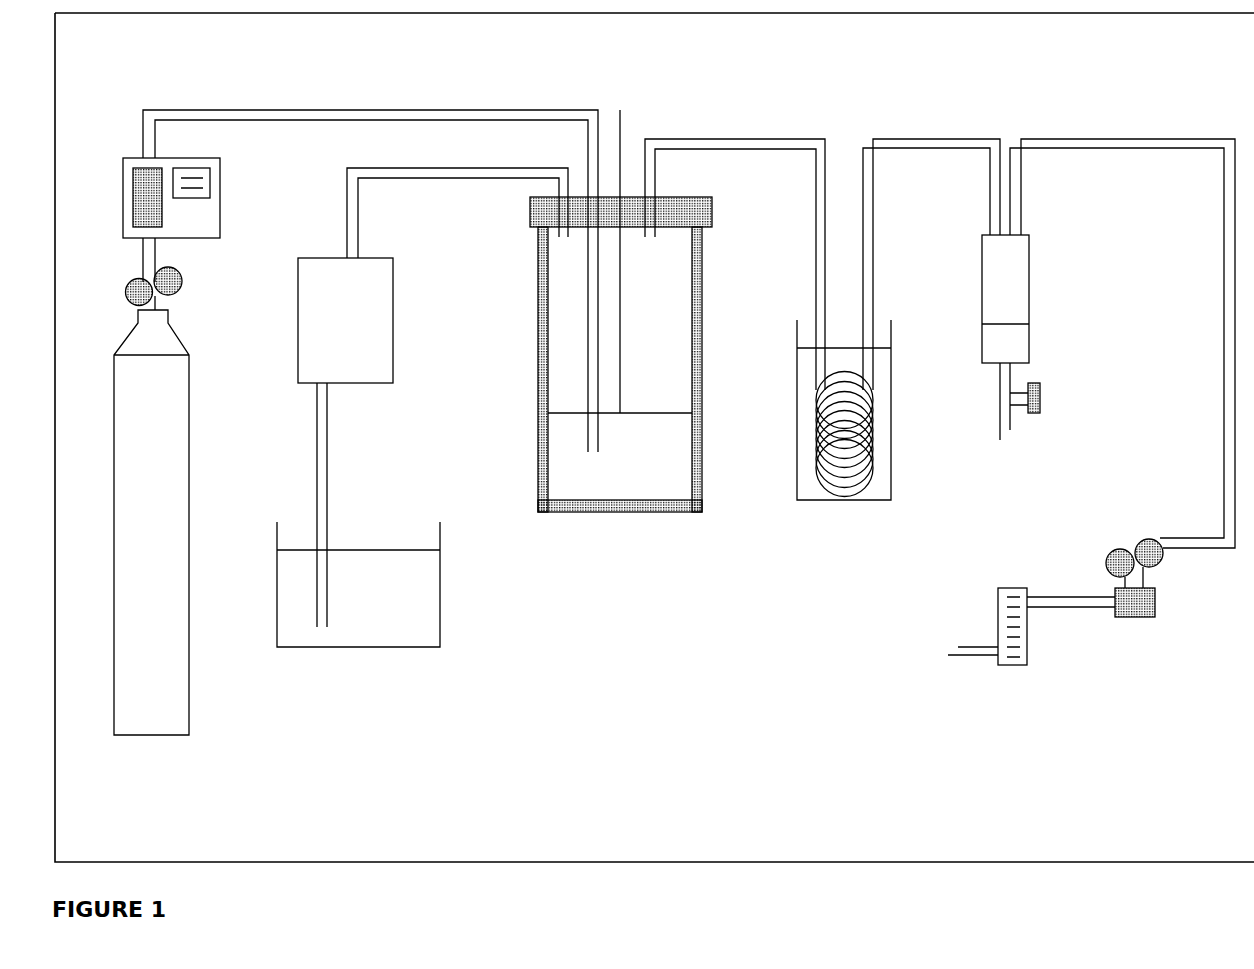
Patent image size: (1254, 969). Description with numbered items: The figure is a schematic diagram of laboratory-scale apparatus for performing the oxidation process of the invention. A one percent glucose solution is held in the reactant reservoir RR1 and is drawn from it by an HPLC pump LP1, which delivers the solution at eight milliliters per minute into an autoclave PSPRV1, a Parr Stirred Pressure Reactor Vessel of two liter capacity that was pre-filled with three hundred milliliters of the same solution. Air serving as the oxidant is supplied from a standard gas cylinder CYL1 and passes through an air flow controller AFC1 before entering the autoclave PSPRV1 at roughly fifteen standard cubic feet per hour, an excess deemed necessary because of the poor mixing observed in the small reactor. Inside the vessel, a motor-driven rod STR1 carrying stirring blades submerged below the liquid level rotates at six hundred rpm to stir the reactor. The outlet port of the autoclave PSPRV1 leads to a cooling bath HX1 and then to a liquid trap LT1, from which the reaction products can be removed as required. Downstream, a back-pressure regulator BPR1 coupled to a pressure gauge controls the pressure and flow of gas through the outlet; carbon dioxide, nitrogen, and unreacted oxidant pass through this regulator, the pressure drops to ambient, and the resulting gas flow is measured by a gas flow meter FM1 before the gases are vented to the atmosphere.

The air flow controller AFC1 is at (360, 281).
The gas cylinder CYL1 is at (180, 501).
The HPLC pump LP1 is at (433, 397).
The reactant reservoir RR1 is at (358, 604).
The motor-driven rod STR1 is at (644, 241).
The autoclave PSPRV1 is at (677, 338).
The cooling bath HX1 is at (898, 340).
The liquid trap LT1 is at (1108, 343).
The gas flow meter FM1 is at (987, 606).
The back-pressure regulator BPR1 is at (1095, 598).